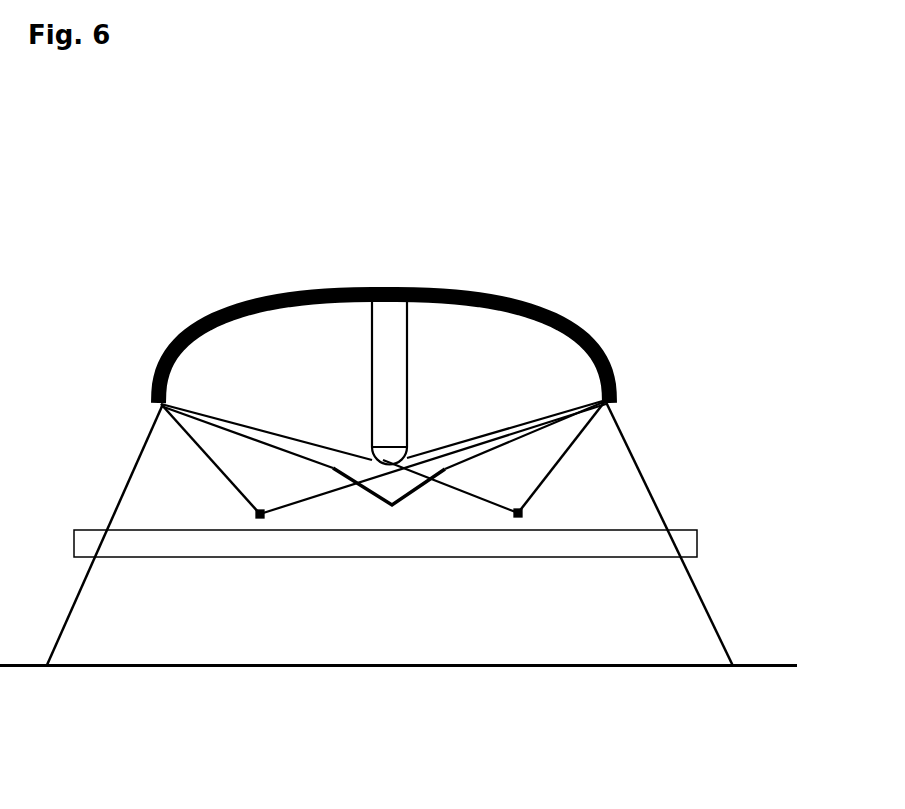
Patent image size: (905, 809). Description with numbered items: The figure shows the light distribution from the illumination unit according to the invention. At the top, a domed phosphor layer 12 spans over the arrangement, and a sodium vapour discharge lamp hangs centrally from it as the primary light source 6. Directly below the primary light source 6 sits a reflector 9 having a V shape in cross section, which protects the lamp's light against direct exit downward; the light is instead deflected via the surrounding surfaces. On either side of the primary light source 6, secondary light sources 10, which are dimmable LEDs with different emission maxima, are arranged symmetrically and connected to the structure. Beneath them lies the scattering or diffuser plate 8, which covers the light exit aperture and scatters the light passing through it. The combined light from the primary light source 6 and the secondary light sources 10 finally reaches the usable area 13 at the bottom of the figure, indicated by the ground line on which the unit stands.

The sodium vapour discharge lamp 6 is at (411, 430).
The scattering means (diffuser plate) 8 is at (699, 528).
The reflector 9 is at (420, 489).
The dimmable LEDs 10 is at (252, 509).
The phosphor layer 12 is at (228, 311).
The usable area 13 is at (706, 662).